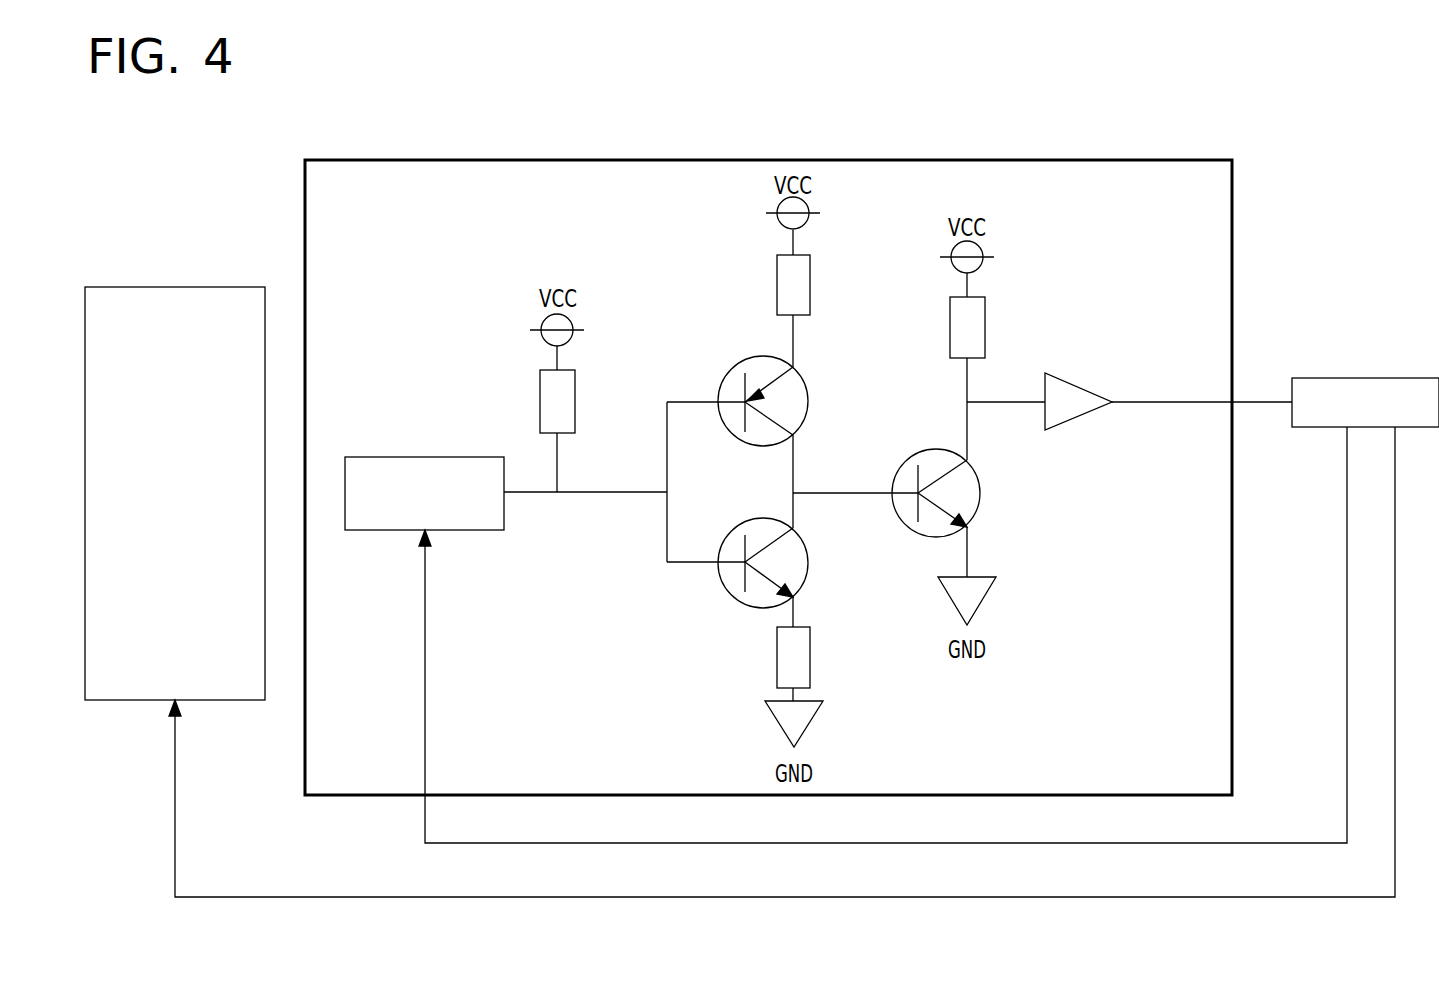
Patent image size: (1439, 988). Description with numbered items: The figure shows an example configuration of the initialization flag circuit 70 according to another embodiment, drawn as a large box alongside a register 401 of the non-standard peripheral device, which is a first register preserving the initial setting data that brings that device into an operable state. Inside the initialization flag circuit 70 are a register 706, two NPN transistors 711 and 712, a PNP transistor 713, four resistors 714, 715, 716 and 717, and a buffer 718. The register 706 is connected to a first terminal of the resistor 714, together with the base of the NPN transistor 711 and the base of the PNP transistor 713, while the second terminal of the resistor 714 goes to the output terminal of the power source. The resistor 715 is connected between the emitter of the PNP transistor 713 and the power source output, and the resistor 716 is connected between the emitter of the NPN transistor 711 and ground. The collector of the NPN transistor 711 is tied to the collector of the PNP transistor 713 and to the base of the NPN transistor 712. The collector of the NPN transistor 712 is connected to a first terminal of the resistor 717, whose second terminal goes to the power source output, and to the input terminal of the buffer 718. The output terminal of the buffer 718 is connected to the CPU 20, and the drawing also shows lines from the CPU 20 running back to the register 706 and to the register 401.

The initialization flag circuit 70 is at (1172, 160).
The register 401 is at (222, 287).
The register 706 is at (383, 457).
The NPN transistor 711 is at (808, 565).
The NPN transistor 712 is at (980, 497).
The PNP transistor 713 is at (808, 405).
The resistor 714 is at (575, 410).
The resistor 715 is at (810, 290).
The resistor 716 is at (810, 660).
The resistor 717 is at (985, 326).
The buffer 718 is at (1080, 388).
The CPU 20 is at (1368, 378).